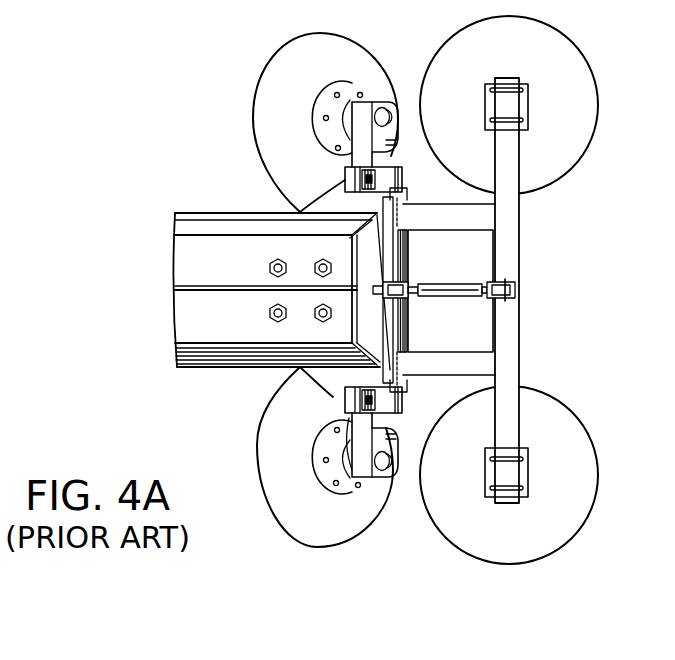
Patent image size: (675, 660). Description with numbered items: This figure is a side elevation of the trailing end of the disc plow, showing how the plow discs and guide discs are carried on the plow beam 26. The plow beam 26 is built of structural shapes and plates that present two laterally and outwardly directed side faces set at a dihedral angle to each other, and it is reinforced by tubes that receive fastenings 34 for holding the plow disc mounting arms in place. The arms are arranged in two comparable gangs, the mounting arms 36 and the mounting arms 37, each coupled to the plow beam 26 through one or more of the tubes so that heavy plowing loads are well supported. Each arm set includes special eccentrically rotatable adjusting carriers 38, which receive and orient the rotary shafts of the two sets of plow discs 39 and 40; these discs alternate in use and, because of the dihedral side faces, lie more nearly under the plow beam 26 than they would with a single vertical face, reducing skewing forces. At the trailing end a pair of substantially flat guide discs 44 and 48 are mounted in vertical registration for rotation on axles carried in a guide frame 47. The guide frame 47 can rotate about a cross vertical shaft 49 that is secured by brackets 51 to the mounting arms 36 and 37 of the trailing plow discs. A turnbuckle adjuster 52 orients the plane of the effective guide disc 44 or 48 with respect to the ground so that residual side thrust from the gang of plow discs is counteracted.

The plow beam 26 is at (197, 205).
The fastenings 34 is at (270, 268).
The plow disc mounting arms 36 is at (372, 100).
The plow disc mounting arms 37 is at (398, 434).
The eccentrically rotatable adjusting carriers 38 is at (340, 125).
The plow discs 39 is at (285, 63).
The plow discs 40 is at (265, 460).
The guide disc 44 is at (584, 105).
The guide frame 47 is at (510, 243).
The guide disc 48 is at (552, 412).
The cross vertical shaft 49 is at (402, 183).
The brackets 51 is at (355, 183).
The turnbuckle adjuster 52 is at (426, 283).